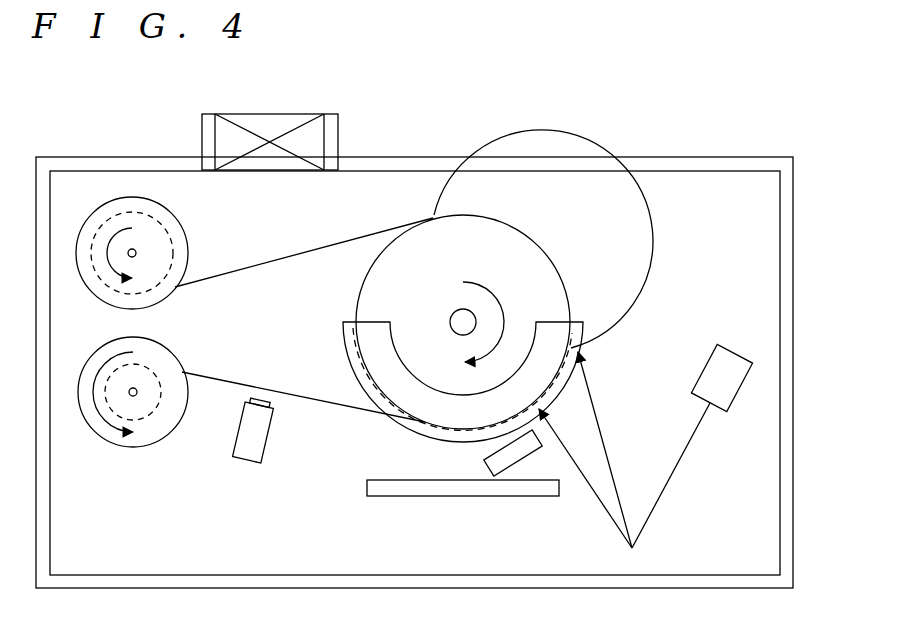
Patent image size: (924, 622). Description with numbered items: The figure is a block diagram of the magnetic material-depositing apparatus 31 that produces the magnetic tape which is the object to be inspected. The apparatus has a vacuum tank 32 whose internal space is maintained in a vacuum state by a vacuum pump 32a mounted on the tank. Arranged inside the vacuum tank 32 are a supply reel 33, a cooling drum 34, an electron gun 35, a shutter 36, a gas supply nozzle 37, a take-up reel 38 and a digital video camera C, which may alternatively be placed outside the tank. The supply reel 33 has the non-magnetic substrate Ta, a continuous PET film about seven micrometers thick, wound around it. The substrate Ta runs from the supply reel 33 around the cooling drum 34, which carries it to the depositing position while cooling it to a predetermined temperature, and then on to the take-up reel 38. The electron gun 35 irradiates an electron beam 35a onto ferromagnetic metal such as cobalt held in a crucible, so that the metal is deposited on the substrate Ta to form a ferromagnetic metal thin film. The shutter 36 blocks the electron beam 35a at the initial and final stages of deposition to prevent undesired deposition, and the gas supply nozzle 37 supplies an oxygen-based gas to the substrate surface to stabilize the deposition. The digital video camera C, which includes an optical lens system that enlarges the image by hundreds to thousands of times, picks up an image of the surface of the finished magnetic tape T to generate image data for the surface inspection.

The magnetic material-depositing apparatus 31 is at (449, 110).
The vacuum tank 32 is at (560, 156).
The vacuum pump 32a is at (200, 137).
The supply reel 33 is at (186, 243).
The cooling drum 34 is at (537, 264).
The electron gun 35 is at (737, 362).
The electron beam 35a is at (582, 463).
The shutter 36 is at (484, 490).
The gas supply nozzle 37 is at (485, 468).
The take-up reel 38 is at (167, 432).
The magnetic tape T is at (157, 362).
The non-magnetic substrate Ta is at (165, 305).
The digital video camera C is at (263, 436).